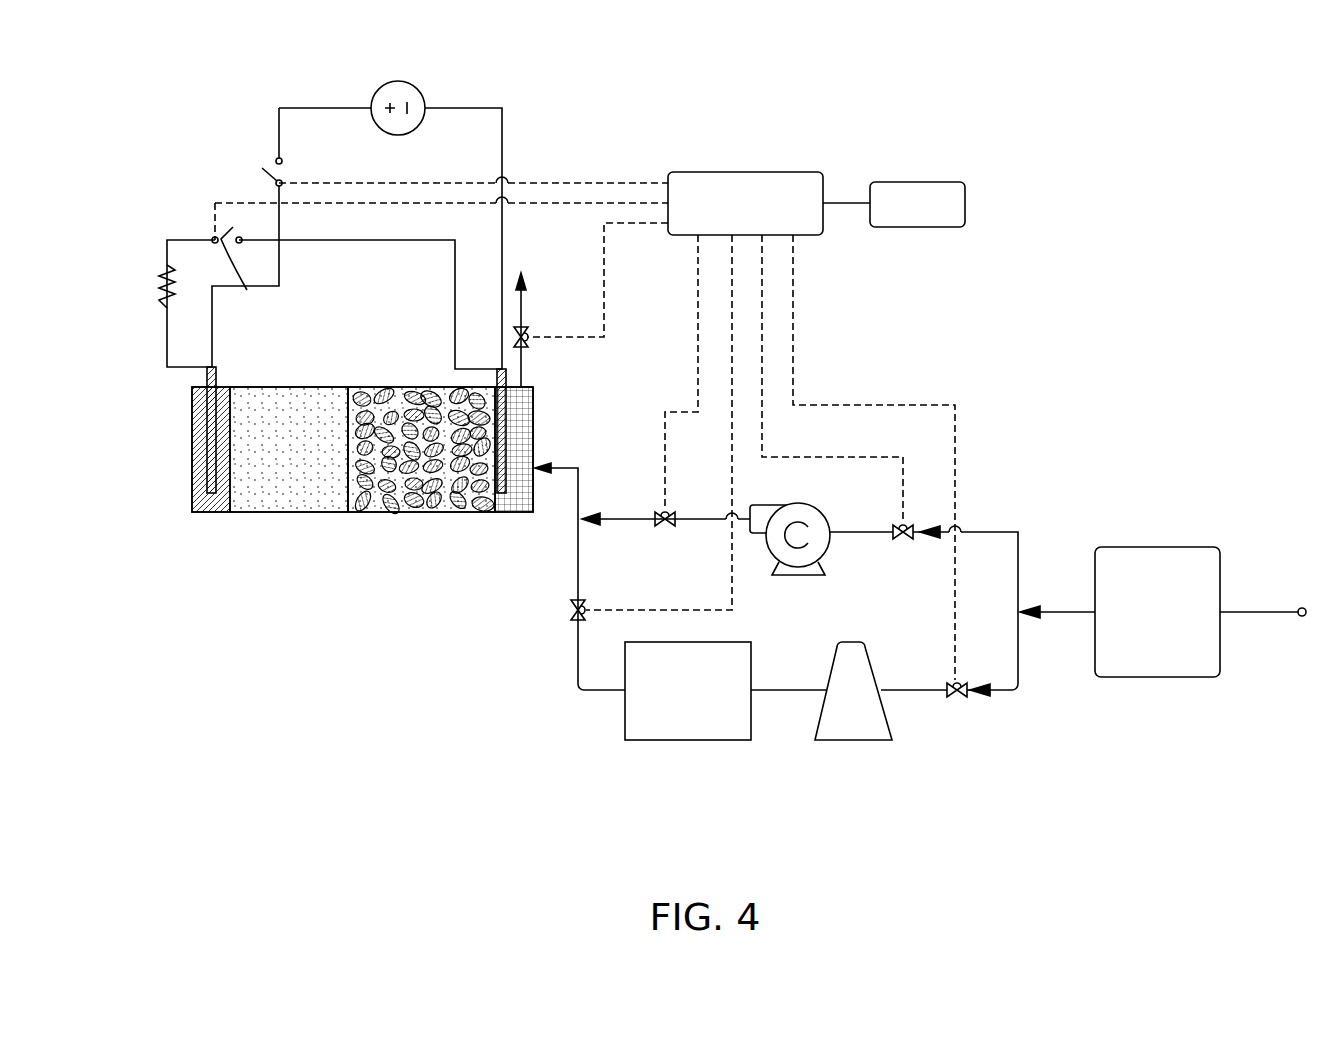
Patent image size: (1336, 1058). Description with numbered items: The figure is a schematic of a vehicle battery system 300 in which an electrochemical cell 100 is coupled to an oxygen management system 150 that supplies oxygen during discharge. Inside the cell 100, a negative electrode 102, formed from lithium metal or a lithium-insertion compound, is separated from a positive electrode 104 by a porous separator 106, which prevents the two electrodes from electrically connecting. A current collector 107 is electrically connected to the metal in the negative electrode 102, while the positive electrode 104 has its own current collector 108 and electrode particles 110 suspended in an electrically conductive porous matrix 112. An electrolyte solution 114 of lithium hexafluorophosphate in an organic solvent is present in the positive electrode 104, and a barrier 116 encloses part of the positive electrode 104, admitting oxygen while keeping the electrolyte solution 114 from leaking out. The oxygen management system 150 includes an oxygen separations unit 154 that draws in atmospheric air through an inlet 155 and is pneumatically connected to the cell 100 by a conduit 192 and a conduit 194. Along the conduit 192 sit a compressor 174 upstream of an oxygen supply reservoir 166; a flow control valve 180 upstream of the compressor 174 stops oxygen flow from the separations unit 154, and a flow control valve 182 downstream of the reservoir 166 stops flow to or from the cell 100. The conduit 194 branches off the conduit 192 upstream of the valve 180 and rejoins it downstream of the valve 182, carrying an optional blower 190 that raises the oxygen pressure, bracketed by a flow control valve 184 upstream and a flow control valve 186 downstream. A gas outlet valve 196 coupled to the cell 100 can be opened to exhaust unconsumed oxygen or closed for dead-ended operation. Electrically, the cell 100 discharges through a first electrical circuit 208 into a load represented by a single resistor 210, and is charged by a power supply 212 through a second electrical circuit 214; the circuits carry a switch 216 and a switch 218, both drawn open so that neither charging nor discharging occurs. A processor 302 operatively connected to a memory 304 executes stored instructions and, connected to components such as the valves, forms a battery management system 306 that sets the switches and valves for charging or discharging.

The electrochemical cell 100 is at (156, 413).
The negative electrode 102 is at (191, 495).
The positive electrode 104 is at (420, 513).
The porous separator 106 is at (288, 387).
The current collector 107 is at (218, 372).
The current collector 108 is at (497, 377).
The electrode particles 110 is at (370, 388).
The porous matrix 112 is at (404, 416).
The electrolyte solution 114 is at (412, 488).
The barrier 116 is at (515, 513).
The oxygen management system 150 is at (1010, 435).
The oxygen separations unit 154 is at (1147, 547).
The inlet 155 is at (1303, 607).
The oxygen supply reservoir 166 is at (695, 742).
The compressor 174 is at (868, 740).
The flow control valve 180 is at (962, 700).
The flow control valve 182 is at (570, 618).
The flow control valve 184 is at (906, 540).
The flow control valve 186 is at (658, 512).
The blower 190 is at (800, 503).
The conduit 192 is at (575, 580).
The conduit 194 is at (848, 533).
The gas outlet valve 196 is at (530, 346).
The first electrical circuit 208 is at (160, 340).
The resistor 210 is at (166, 263).
The power supply 212 is at (388, 82).
The second electrical circuit 214 is at (470, 108).
The switch 216 is at (237, 271).
The switch 218 is at (260, 174).
The vehicle battery system 300 is at (1098, 132).
The processor 302 is at (728, 172).
The memory 304 is at (912, 182).
The battery management system 306 is at (830, 115).